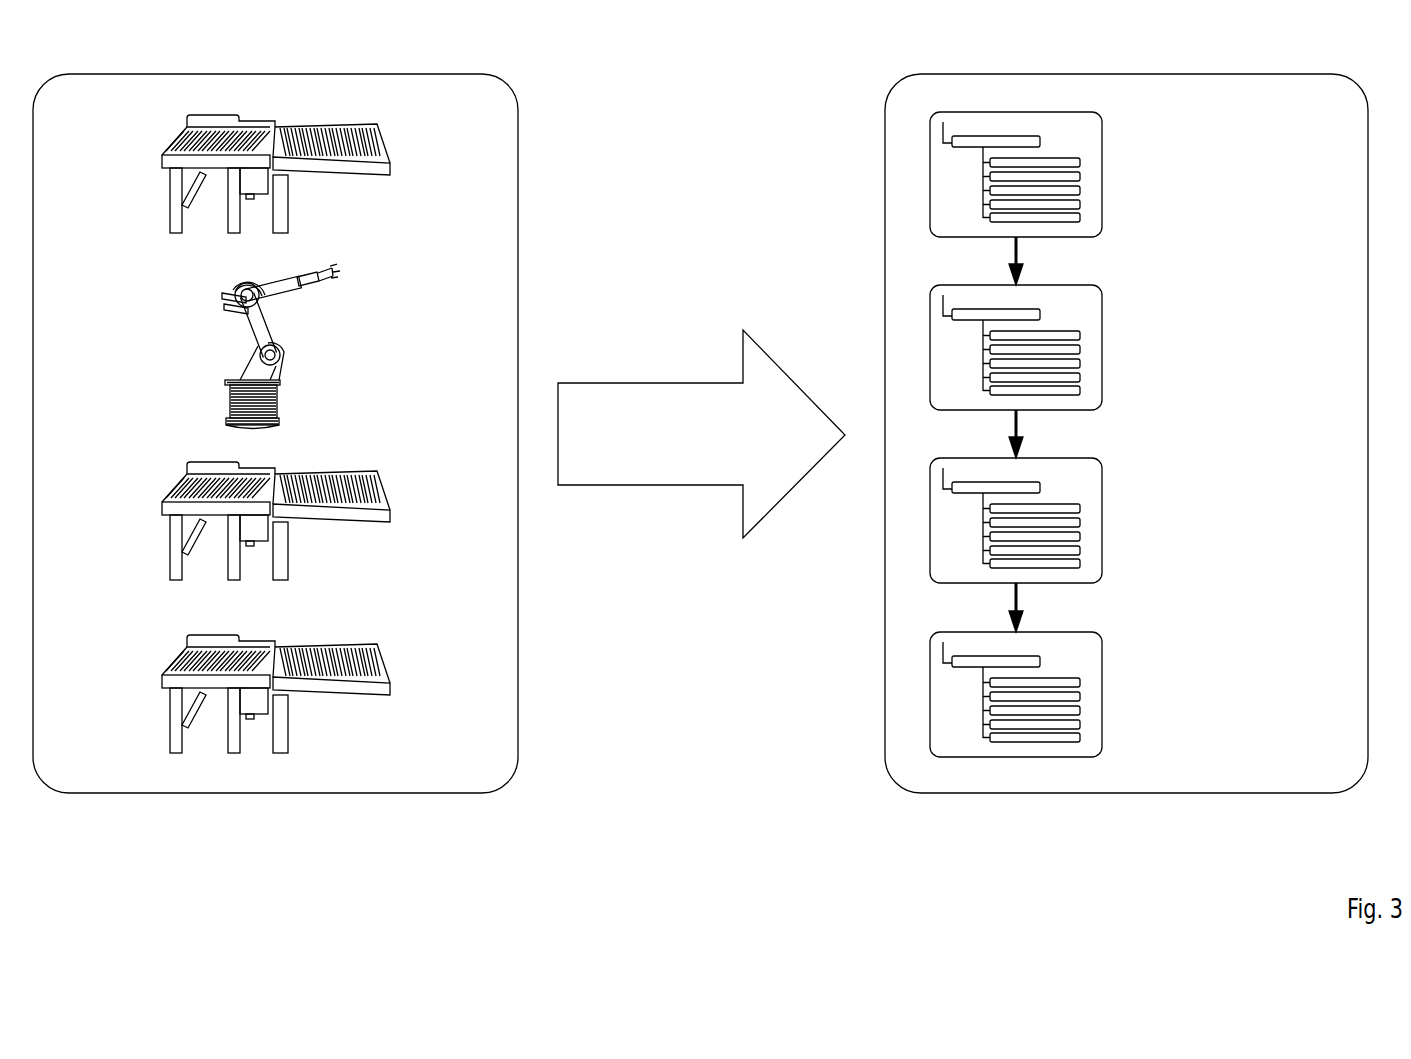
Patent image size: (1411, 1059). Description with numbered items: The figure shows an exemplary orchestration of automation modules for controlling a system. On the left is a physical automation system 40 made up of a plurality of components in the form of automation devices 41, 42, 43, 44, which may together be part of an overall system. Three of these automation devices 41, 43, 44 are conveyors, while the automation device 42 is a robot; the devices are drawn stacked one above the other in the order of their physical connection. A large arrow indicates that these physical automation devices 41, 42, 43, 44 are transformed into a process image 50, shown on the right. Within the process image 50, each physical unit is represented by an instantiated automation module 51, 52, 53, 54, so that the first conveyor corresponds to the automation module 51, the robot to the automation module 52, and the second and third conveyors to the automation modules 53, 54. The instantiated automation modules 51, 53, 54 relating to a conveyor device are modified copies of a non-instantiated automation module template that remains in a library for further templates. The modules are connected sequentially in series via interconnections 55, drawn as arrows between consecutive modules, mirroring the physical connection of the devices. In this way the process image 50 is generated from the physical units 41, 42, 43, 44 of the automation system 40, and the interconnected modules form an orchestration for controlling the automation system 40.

The automation system 40 is at (503, 82).
The automation device 41 is at (392, 140).
The automation device 42 is at (323, 340).
The automation device 43 is at (392, 482).
The automation device 44 is at (392, 654).
The process image 50 is at (1103, 72).
The instantiated automation module 51 is at (1105, 117).
The instantiated automation module 52 is at (1105, 290).
The instantiated automation module 53 is at (1105, 463).
The instantiated automation module 54 is at (1105, 637).
The interconnection 55 is at (1027, 271).